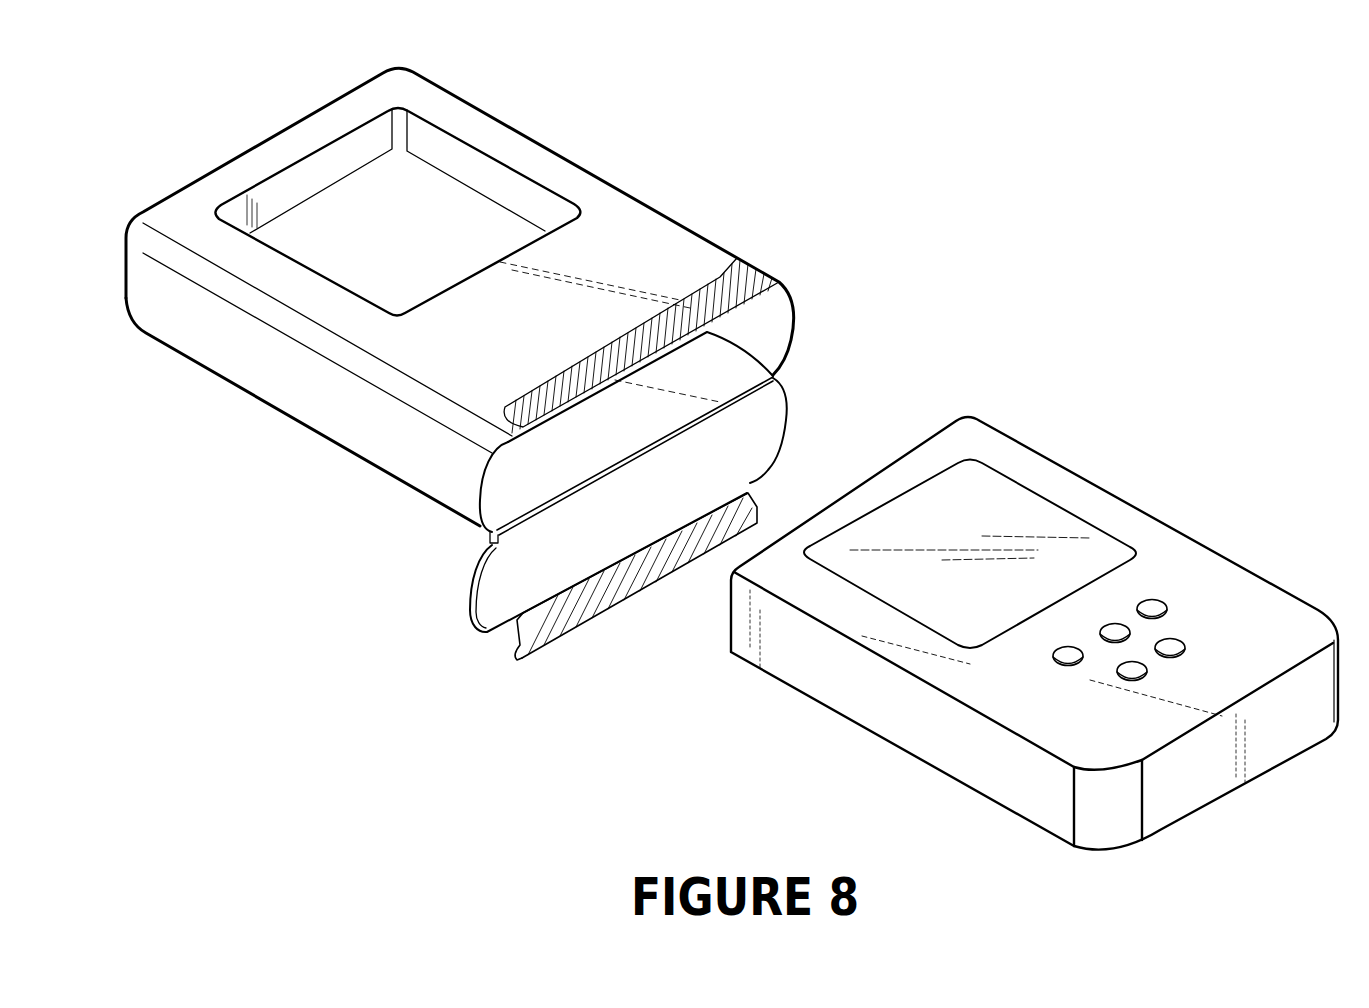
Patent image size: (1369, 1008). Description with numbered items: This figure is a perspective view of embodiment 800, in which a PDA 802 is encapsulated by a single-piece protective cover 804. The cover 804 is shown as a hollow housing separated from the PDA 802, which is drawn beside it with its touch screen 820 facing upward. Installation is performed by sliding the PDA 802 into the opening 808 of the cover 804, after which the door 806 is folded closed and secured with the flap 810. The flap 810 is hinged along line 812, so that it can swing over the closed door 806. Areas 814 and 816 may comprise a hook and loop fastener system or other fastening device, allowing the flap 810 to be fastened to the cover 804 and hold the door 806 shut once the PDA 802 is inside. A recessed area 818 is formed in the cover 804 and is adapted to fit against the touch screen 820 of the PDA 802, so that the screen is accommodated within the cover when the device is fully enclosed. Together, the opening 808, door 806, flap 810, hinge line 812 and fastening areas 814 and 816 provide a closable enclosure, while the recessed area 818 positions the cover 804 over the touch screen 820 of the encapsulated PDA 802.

The embodiment 800 is at (522, 410).
The PDA 802 is at (1034, 620).
The protective cover 804 is at (500, 297).
The door 806 is at (750, 455).
The opening 808 is at (763, 375).
The flap 810 is at (636, 622).
The hinge line 812 is at (537, 607).
The fastening area 814 is at (667, 562).
The fastening area 816 is at (723, 293).
The recessed area 818 is at (477, 223).
The touch screen 820 is at (1018, 520).